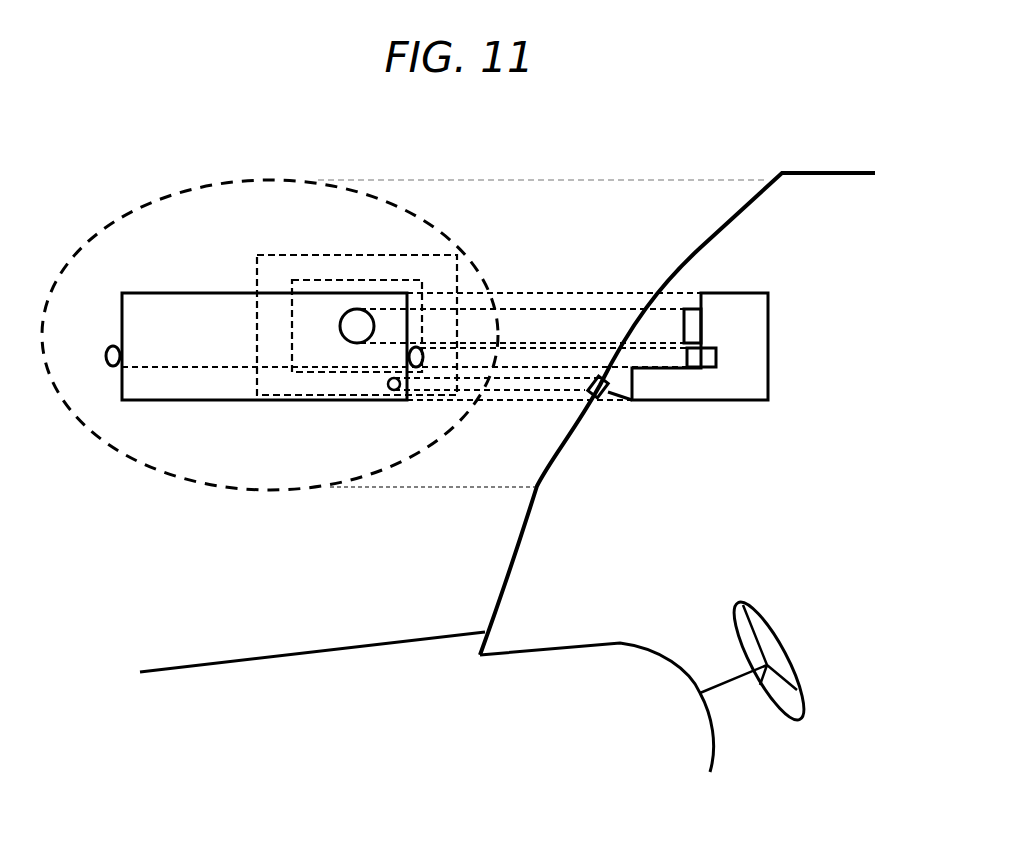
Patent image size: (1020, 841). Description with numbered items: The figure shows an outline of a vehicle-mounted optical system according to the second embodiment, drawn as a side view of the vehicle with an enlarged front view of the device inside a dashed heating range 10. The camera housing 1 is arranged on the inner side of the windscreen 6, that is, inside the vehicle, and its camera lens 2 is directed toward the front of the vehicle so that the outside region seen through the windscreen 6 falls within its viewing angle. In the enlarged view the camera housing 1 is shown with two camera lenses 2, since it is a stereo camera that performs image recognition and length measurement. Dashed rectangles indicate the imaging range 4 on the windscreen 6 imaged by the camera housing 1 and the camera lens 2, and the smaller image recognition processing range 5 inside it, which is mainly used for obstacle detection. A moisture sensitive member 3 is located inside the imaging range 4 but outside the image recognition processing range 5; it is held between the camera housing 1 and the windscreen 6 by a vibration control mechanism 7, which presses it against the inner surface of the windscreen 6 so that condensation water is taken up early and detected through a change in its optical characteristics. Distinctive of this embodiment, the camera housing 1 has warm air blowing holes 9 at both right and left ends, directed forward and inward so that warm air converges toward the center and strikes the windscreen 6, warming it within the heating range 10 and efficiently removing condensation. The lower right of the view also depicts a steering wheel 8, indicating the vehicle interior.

The camera housing 1 is at (170, 293).
The camera lens 2 is at (355, 320).
The moisture sensitive member 3 is at (393, 390).
The imaging range 4 is at (282, 397).
The image recognition processing range 5 is at (364, 374).
The windscreen 6 is at (683, 262).
The vibration control mechanism 7 is at (612, 395).
The propeller 8 is at (773, 627).
The warm air blowing hole 9 is at (113, 366).
The heating range 10 is at (440, 228).